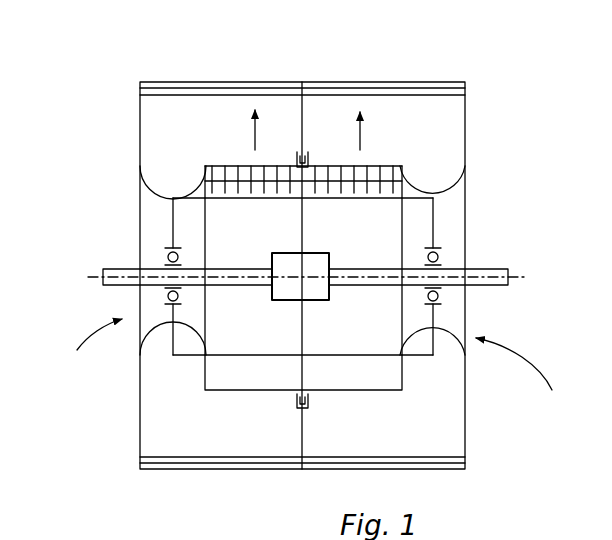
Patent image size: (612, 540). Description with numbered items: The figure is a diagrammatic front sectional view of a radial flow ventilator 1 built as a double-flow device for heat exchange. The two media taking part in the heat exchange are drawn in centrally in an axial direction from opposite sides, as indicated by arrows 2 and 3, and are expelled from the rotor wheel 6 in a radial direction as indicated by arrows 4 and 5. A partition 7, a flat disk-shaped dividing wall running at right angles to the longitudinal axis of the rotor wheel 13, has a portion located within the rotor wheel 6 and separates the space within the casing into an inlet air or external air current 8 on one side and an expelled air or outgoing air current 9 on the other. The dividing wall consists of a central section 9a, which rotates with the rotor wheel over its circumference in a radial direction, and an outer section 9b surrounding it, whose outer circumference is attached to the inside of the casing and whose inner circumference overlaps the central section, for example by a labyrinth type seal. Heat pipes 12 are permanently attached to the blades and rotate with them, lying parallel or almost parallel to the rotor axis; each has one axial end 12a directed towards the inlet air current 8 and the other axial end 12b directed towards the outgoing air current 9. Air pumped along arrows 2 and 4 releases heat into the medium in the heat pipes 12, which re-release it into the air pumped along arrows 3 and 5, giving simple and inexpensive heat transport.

The radial flow ventilator 1 is at (112, 150).
The arrow 2 is at (112, 220).
The arrow 3 is at (476, 240).
The arrow 4 is at (244, 130).
The arrow 5 is at (372, 131).
The rotor wheel 6 is at (226, 218).
The partition 7 is at (303, 115).
The inlet air or external air current 8 is at (249, 236).
The expelled air or outgoing air current 9 is at (361, 234).
The central section 9a is at (300, 335).
The outer section 9b is at (302, 430).
The heat pipe 12 is at (282, 167).
The axial end of heat pipe 12a is at (228, 168).
The axial end of heat pipe 12b is at (392, 168).
The longitudinal axis of the rotor wheel 13 is at (88, 277).